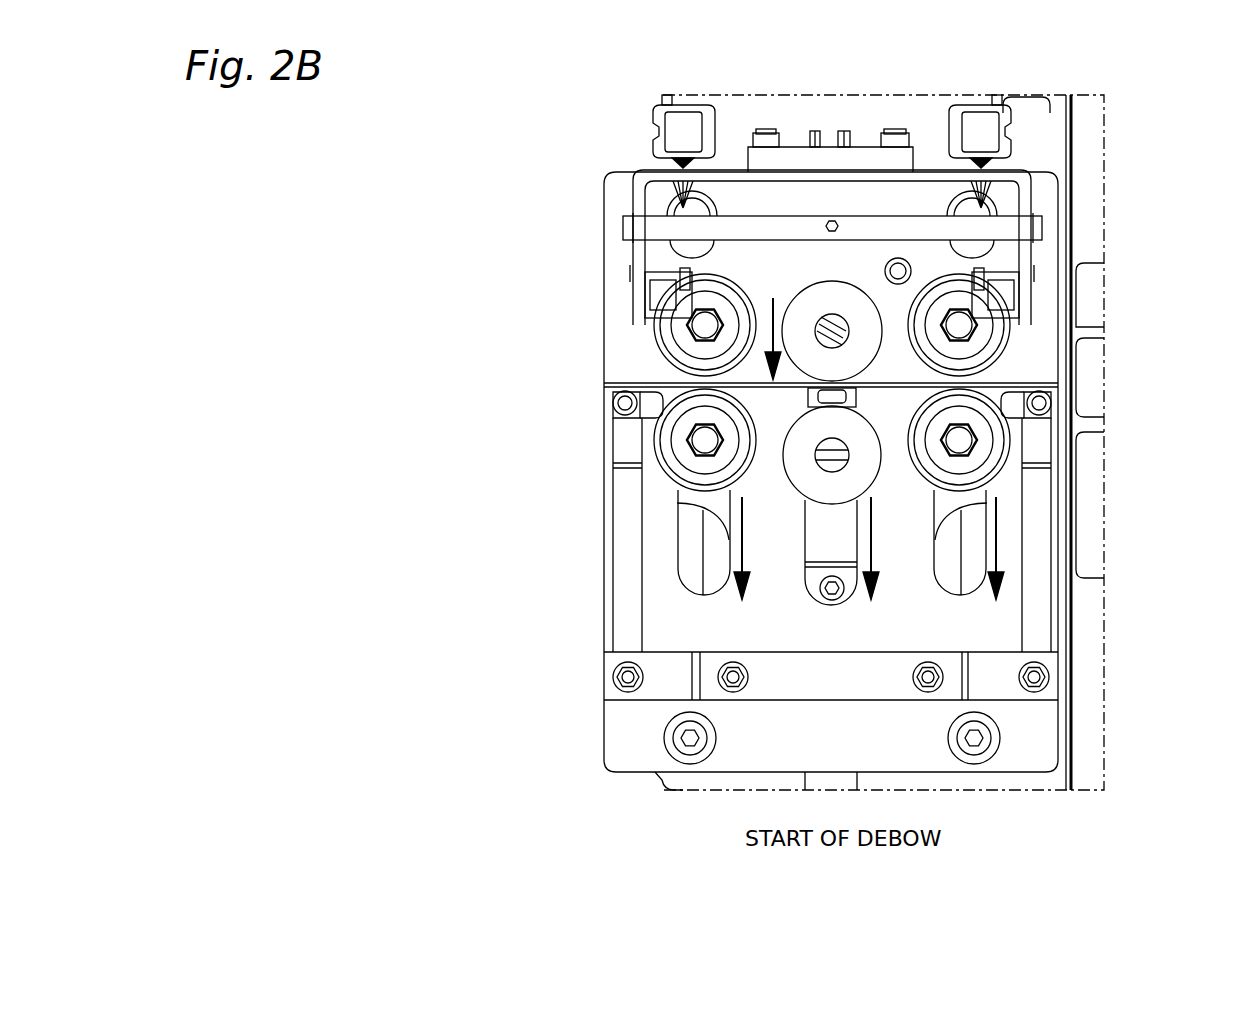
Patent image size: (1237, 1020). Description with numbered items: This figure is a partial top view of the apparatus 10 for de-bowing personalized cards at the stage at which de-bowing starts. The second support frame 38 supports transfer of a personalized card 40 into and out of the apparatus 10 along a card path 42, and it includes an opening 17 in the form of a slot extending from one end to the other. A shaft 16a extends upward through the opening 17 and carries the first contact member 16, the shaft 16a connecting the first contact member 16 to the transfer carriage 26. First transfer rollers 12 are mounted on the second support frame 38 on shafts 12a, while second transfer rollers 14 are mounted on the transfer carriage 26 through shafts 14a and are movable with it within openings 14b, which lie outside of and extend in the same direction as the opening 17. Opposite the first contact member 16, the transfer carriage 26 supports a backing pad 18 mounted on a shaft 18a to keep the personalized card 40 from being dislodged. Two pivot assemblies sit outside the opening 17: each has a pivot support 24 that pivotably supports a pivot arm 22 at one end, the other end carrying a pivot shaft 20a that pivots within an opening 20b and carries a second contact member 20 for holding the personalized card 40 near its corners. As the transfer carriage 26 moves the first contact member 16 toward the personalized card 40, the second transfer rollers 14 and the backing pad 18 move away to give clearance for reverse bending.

The apparatus 10 is at (488, 136).
The first transfer rollers 12 is at (657, 337).
The shafts 12a is at (683, 294).
The second transfer rollers 14 is at (688, 460).
The shafts 14a is at (688, 486).
The openings 14b is at (678, 536).
The first contact member 16 is at (838, 282).
The shaft 16a is at (829, 317).
The opening 17 is at (812, 590).
The backing pad 18 is at (868, 487).
The shaft 18a is at (827, 470).
The second contact members 20 is at (618, 393).
The pivot shaft 20a is at (627, 408).
The openings 20b is at (657, 403).
The pivot arm 22 is at (611, 600).
The pivot support 24 is at (613, 700).
The transfer carriage 26 is at (803, 547).
The second support frame 38 is at (620, 176).
The personalized card 40 is at (653, 378).
The card path 42 is at (603, 378).